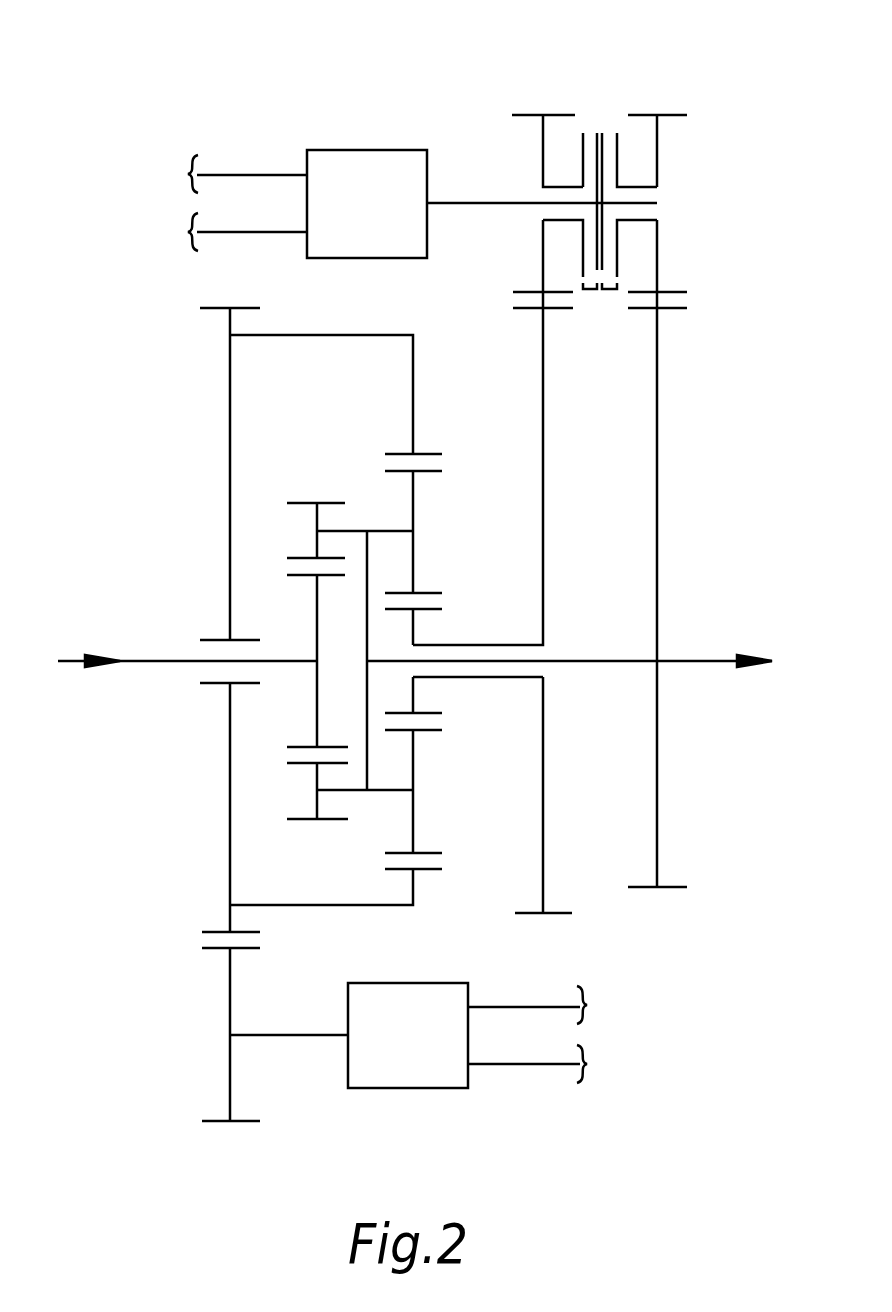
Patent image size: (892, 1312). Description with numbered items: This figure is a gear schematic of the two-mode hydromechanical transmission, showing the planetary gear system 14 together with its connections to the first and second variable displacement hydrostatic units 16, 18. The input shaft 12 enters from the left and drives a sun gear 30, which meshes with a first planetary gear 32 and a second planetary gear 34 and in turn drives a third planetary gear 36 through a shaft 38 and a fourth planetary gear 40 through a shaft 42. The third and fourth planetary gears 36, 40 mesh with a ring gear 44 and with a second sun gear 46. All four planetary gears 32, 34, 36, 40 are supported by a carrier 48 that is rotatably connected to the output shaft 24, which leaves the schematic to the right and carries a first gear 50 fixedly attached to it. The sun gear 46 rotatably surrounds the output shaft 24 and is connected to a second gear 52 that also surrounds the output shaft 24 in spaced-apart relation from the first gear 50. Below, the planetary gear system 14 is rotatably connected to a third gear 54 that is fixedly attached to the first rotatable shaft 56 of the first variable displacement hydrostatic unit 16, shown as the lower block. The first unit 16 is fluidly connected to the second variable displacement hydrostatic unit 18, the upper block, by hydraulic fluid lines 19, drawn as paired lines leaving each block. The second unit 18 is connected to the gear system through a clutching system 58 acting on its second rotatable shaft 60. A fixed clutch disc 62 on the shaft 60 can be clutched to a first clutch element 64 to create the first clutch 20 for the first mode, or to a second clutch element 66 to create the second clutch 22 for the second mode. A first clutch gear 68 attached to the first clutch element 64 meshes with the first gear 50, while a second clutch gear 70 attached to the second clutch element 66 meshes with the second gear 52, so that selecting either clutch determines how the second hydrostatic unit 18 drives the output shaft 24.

The input shaft 12 is at (148, 659).
The planetary gear system 14 is at (128, 387).
The first variable displacement hydrostatic unit 16 is at (425, 1088).
The second variable displacement hydrostatic unit 18 is at (362, 150).
The hydraulic fluid lines 19 is at (254, 175).
The first clutch 20 is at (607, 291).
The second clutch 22 is at (593, 291).
The output shaft 24 is at (709, 659).
The sun gear 30 is at (317, 608).
The first planetary gear 32 is at (317, 531).
The second planetary gear 34 is at (317, 798).
The third planetary gear 36 is at (413, 815).
The shaft 38 is at (377, 790).
The fourth planetary gear 40 is at (413, 500).
The shaft 42 is at (377, 531).
The ring gear 44 is at (357, 905).
The sun gear 46 is at (413, 695).
The carrier 48 is at (367, 588).
The first gear 50 is at (657, 521).
The second gear 52 is at (543, 511).
The third gear 54 is at (230, 1015).
The first rotatable shaft 56 is at (280, 1035).
The clutching system 58 is at (692, 122).
The second rotatable shaft 60 is at (483, 203).
The fixed clutch disc 62 is at (601, 135).
The first clutch element 64 is at (618, 135).
The second clutch element 66 is at (584, 135).
The first clutch gear 68 is at (657, 172).
The second clutch gear 70 is at (543, 142).